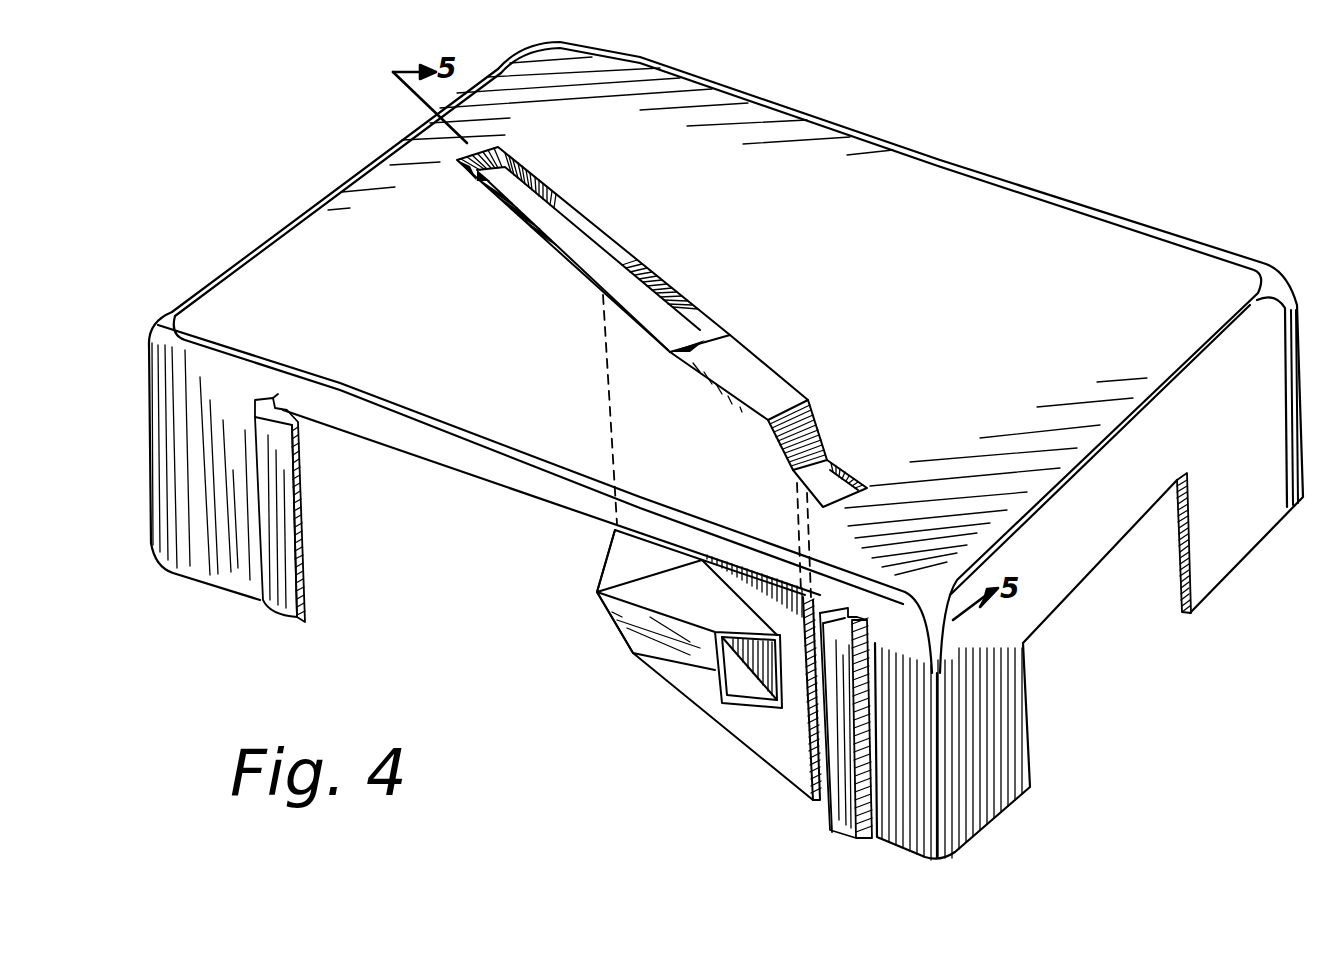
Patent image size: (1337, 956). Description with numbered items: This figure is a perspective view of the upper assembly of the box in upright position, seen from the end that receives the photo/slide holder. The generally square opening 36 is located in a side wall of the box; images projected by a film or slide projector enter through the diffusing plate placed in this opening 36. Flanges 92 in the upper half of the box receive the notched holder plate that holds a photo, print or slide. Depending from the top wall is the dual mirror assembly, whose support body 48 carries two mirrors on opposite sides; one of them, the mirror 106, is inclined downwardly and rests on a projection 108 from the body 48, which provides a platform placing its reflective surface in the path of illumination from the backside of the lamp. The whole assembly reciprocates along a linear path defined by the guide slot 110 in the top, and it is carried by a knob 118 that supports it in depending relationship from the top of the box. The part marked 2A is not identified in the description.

The cover 2A is at (403, 452).
The opening 36 is at (1177, 528).
The support body 48 is at (790, 763).
The flanges 92 is at (835, 833).
The mirror 106 is at (633, 634).
The projection 108 is at (607, 562).
The guide slot 110 is at (603, 293).
The knob 118 is at (747, 427).